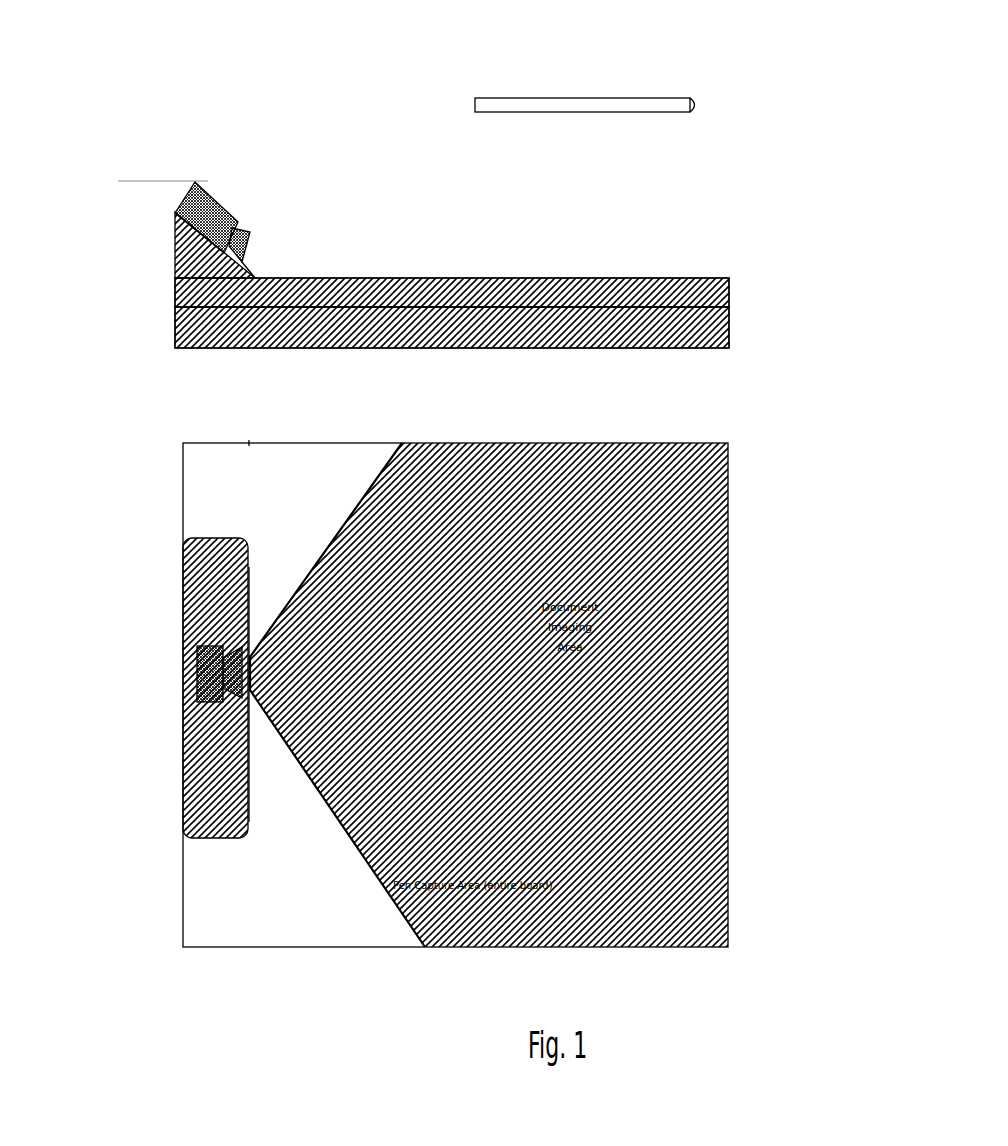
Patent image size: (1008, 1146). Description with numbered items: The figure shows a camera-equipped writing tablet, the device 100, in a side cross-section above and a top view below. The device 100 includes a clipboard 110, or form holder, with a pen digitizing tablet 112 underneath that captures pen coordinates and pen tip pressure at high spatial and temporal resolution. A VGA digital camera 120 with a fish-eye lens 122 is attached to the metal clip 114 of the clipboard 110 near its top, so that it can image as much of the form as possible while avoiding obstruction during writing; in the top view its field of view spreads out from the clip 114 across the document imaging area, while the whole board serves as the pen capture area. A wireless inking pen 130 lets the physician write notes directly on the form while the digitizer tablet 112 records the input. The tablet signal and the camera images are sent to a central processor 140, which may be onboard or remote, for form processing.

The device 100 is at (774, 318).
The clipboard 110 is at (187, 292).
The pen digitizing tablet 112 is at (187, 333).
The metal clip 114 is at (187, 263).
The VGA digital camera 120 is at (215, 218).
The fish-eye lens 122 is at (245, 235).
The wireless inking pen 130 is at (525, 98).
The central processor 140 is at (205, 333).